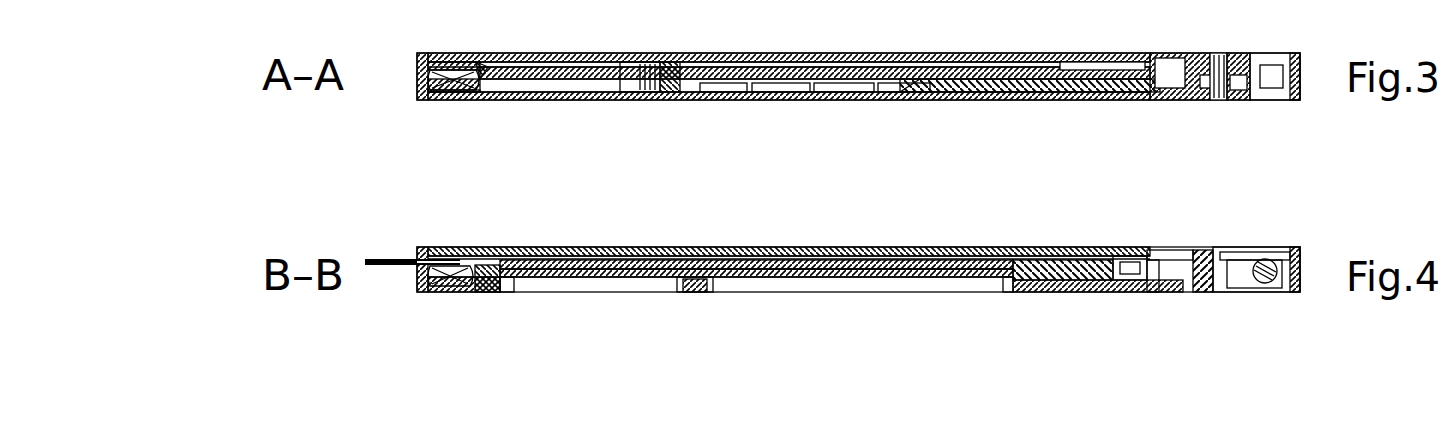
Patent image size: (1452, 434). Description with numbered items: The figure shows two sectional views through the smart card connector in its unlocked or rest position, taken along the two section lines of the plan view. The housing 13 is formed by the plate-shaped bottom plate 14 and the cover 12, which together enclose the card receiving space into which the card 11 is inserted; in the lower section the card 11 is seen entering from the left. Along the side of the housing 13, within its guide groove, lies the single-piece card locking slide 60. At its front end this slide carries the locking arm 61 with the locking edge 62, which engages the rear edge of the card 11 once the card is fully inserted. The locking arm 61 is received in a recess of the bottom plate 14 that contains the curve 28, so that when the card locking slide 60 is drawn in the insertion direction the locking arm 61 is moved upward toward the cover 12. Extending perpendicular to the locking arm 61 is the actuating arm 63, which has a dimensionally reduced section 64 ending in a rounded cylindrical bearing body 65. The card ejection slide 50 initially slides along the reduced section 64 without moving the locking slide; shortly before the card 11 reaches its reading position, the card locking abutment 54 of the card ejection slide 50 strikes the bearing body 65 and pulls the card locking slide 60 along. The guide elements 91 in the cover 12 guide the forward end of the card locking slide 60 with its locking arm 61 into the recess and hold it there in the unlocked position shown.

In FIG. 4, the card 11 is at (387, 257).
In FIG. 3, the cover 12 is at (742, 54).
In FIG. 4, the cover 12 is at (720, 247).
In FIG. 4, the housing 13 is at (990, 245).
In FIG. 3, the bottom plate 14 is at (905, 100).
In FIG. 4, the bottom plate 14 is at (871, 294).
In FIG. 4, the curve 28 is at (490, 283).
In FIG. 3, the card ejection slide 50 is at (1004, 62).
In FIG. 3, the card locking abutment 54 is at (1090, 63).
In FIG. 3, the card locking slide 60 is at (756, 91).
In FIG. 3, the locking arm 61 is at (455, 93).
In FIG. 4, the locking arm 61 is at (456, 288).
In FIG. 3, the locking edge 62 is at (454, 62).
In FIG. 4, the locking edge 62 is at (440, 288).
In FIG. 3, the actuating arm 63 is at (697, 58).
In FIG. 3, the reduced section 64 is at (1033, 93).
In FIG. 3, the bearing body 65 is at (1146, 58).
In FIG. 3, the guide elements 91 is at (479, 63).